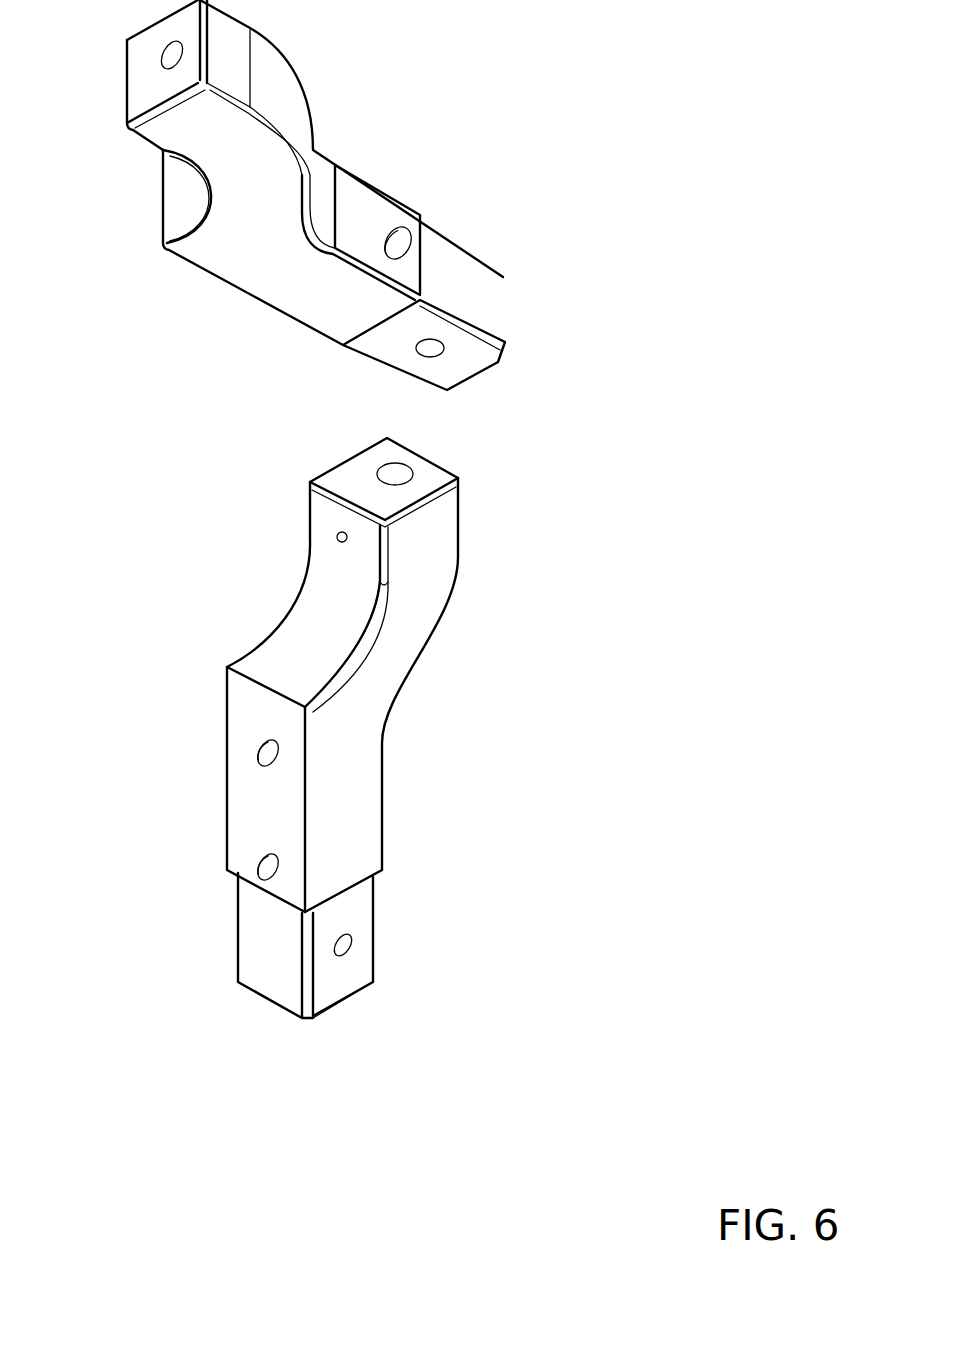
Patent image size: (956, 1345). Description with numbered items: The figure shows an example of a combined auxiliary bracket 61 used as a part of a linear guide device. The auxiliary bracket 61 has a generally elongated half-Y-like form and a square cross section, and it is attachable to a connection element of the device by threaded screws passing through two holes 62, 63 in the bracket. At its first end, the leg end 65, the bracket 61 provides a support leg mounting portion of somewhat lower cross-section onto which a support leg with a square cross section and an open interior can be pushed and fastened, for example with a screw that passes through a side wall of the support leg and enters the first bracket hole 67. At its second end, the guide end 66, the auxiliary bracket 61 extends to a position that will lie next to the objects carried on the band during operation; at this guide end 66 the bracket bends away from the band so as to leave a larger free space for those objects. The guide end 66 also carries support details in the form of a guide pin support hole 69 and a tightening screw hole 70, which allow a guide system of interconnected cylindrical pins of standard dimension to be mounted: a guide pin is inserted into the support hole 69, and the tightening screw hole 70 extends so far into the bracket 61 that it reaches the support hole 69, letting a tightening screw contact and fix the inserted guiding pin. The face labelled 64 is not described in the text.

The auxiliary bracket 61 is at (210, 273).
The hole 62 is at (259, 745).
The hole 63 is at (258, 862).
The side face 64 is at (343, 810).
The leg end 65 is at (377, 938).
The guide end 66 is at (305, 518).
The first bracket hole 67 is at (345, 950).
The guide pin support hole 69 is at (410, 468).
The tightening screw hole 70 is at (347, 540).